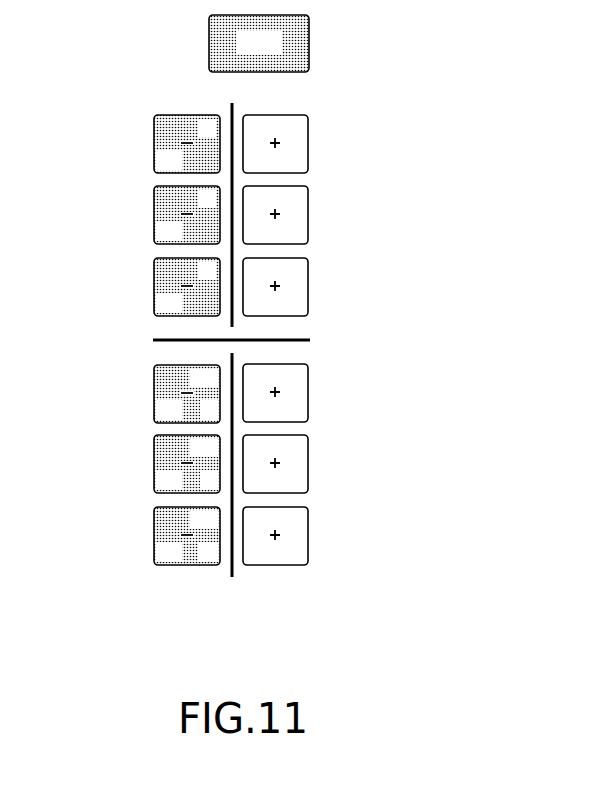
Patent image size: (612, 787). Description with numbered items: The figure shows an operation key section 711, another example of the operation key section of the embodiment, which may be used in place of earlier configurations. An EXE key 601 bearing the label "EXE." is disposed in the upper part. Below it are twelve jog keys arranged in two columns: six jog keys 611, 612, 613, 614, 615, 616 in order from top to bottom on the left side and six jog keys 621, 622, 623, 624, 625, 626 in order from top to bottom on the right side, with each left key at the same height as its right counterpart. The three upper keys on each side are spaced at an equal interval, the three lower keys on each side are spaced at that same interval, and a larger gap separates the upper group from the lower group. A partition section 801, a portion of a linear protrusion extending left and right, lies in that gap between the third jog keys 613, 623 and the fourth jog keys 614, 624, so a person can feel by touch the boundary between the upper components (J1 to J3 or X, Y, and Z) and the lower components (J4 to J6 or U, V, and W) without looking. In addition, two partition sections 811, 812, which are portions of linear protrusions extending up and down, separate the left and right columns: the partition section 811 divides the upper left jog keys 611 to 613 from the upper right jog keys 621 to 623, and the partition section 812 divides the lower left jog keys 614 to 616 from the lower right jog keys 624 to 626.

The EXE key 601 is at (309, 41).
The operation key section 711 is at (403, 101).
The partition section 811 is at (233, 108).
The partition section 801 is at (292, 339).
The partition section 812 is at (234, 573).
The jog key 611 is at (153, 142).
The jog key 612 is at (153, 214).
The jog key 613 is at (153, 285).
The jog key 614 is at (153, 391).
The jog key 615 is at (153, 461).
The jog key 616 is at (153, 532).
The jog key 621 is at (308, 142).
The jog key 622 is at (308, 214).
The jog key 623 is at (308, 285).
The jog key 624 is at (308, 392).
The jog key 625 is at (308, 460).
The jog key 626 is at (308, 532).